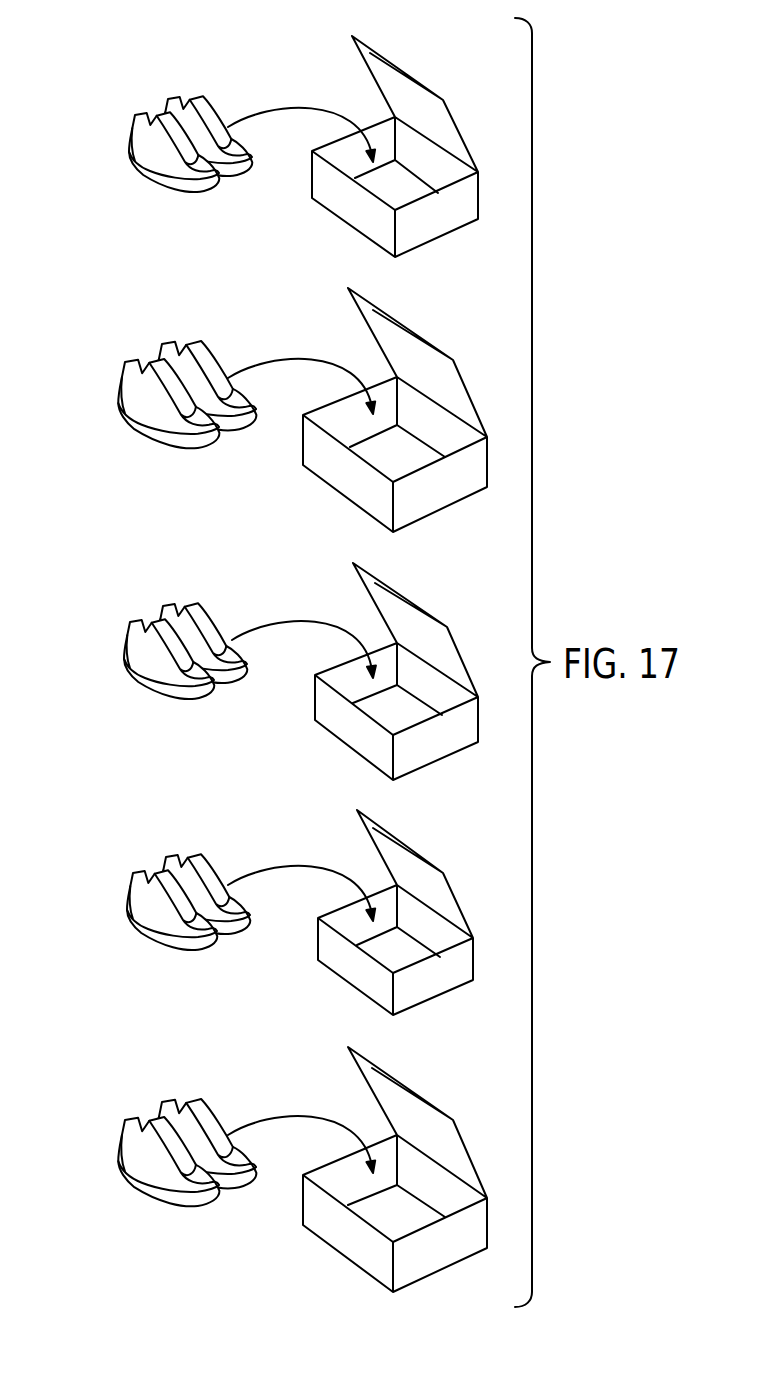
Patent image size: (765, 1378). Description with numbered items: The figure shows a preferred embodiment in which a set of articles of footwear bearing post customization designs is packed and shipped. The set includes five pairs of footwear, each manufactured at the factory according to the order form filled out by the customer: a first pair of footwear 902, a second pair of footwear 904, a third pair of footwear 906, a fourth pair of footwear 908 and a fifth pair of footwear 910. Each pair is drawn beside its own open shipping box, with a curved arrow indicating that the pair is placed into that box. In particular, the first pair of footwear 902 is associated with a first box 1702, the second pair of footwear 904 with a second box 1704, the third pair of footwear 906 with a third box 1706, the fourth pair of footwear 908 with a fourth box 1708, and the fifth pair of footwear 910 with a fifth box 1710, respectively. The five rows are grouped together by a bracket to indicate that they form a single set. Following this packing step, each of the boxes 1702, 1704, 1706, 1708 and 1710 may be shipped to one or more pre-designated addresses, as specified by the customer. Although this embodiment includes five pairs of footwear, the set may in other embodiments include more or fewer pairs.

The first pair of footwear 902 is at (129, 132).
The second pair of footwear 904 is at (120, 387).
The third pair of footwear 906 is at (125, 646).
The fourth pair of footwear 908 is at (130, 894).
The fifth pair of footwear 910 is at (120, 1142).
The first box 1702 is at (357, 212).
The second box 1704 is at (345, 478).
The third box 1706 is at (350, 733).
The fourth box 1708 is at (362, 982).
The fifth box 1710 is at (360, 1243).